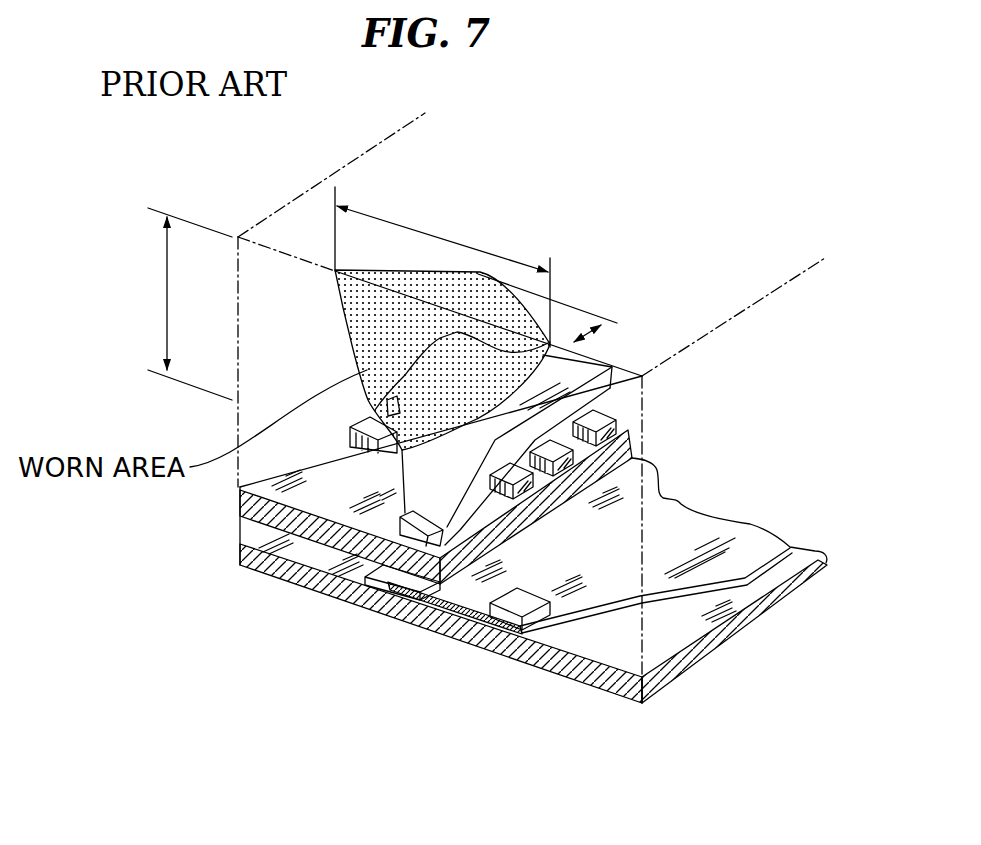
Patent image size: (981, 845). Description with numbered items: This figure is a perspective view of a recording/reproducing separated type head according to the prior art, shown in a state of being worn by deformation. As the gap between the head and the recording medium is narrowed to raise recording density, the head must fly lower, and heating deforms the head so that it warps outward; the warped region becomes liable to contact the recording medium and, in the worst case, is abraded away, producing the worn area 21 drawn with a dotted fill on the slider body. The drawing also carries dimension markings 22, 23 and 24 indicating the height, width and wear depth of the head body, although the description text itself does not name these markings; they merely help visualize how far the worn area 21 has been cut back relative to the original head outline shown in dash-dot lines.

The worn area 21 is at (350, 327).
The slider height h 22 is at (165, 260).
The slider width w 23 is at (473, 248).
The wear depth d 24 is at (580, 332).